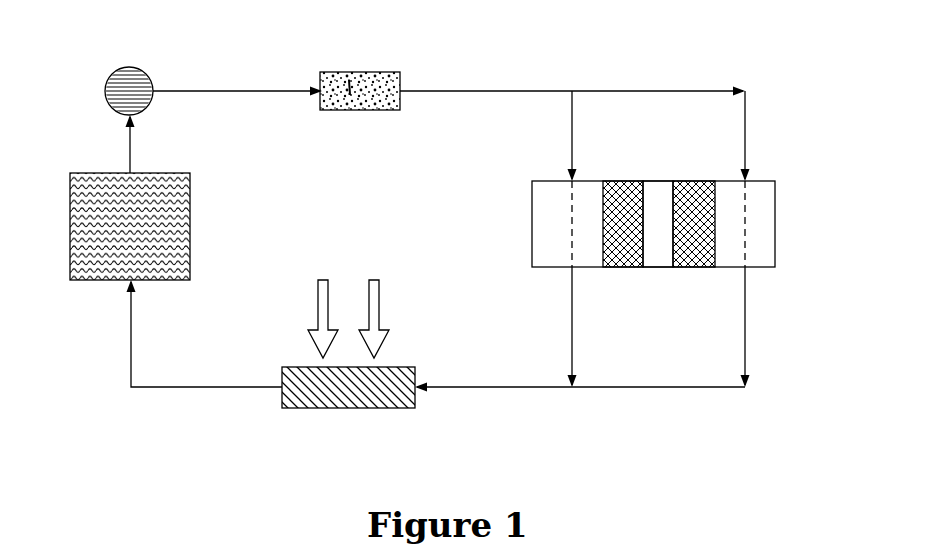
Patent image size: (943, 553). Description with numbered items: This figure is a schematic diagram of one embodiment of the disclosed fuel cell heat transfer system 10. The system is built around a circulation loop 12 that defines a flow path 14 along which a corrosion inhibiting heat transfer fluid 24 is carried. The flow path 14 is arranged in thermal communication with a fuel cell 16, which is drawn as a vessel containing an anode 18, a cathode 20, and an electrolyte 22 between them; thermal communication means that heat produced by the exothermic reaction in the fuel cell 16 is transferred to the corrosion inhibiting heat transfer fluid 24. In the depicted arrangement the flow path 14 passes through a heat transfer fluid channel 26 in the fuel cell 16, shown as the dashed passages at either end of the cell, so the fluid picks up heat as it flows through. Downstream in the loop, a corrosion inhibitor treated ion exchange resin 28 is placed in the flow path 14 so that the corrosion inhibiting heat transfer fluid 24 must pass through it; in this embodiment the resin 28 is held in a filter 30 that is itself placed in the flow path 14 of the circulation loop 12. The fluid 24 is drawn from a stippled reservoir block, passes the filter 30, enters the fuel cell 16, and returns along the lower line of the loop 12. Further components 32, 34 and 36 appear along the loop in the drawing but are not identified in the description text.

The fuel cell heat transfer system 10 is at (178, 440).
The circulation loop 12 is at (534, 90).
The flow path 14 is at (572, 222).
The fuel cell 16 is at (617, 143).
The anode 18 is at (614, 268).
The cathode 20 is at (693, 268).
The electrolyte 22 is at (658, 178).
The corrosion inhibiting heat transfer fluid 24 is at (106, 244).
The heat transfer fluid channel 26 is at (548, 268).
The corrosion inhibitor treated ion exchange resin 28 is at (350, 95).
The filter 30 is at (387, 72).
The pump 32 is at (129, 67).
The condenser / cooler 34 is at (348, 409).
The cooling input arrows 36 is at (329, 286).